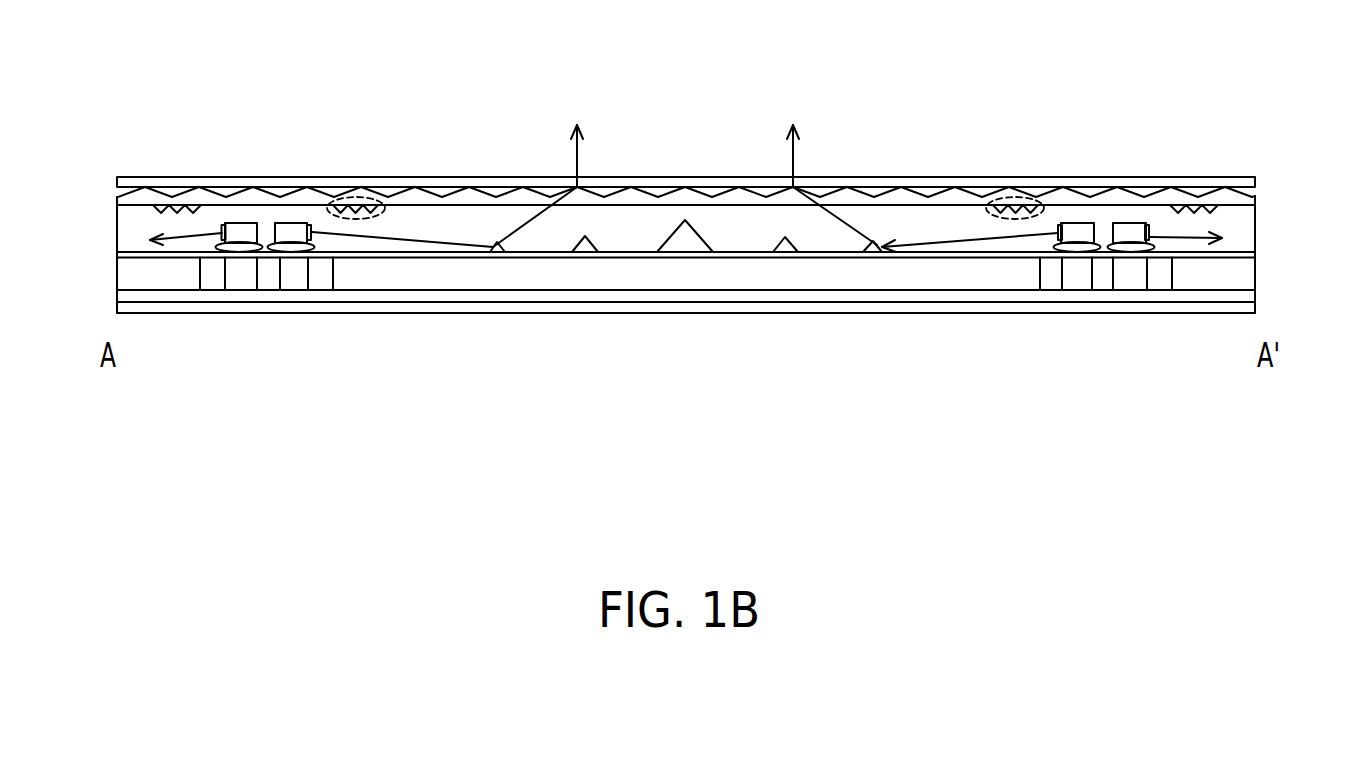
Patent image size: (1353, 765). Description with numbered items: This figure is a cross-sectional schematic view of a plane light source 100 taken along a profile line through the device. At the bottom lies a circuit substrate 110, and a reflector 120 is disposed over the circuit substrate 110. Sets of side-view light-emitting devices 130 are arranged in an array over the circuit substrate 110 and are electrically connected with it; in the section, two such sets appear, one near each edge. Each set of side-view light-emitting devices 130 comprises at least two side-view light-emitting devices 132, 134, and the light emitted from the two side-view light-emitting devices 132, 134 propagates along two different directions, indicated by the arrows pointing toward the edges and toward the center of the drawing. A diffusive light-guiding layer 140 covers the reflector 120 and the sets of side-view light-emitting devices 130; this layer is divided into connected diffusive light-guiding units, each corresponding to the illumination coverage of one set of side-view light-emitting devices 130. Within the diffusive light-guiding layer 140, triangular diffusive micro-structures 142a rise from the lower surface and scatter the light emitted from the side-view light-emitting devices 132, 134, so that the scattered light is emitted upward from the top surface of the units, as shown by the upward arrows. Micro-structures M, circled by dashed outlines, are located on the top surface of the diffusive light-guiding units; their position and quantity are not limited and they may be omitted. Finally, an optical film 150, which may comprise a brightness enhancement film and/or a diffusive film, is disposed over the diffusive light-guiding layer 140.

The plane light source 100 is at (1255, 465).
The circuit substrate 110 is at (1227, 274).
The reflector 120 is at (1218, 256).
The sets of side-view light-emitting devices 130 is at (1050, 75).
The side-view light-emitting device 132 is at (293, 232).
The side-view light-emitting device 134 is at (238, 233).
The diffusive light-guiding layer 140 is at (107, 207).
The diffusive micro-structures 142a is at (587, 247).
The optical film 150 is at (1220, 198).
The micro-structures M is at (355, 220).